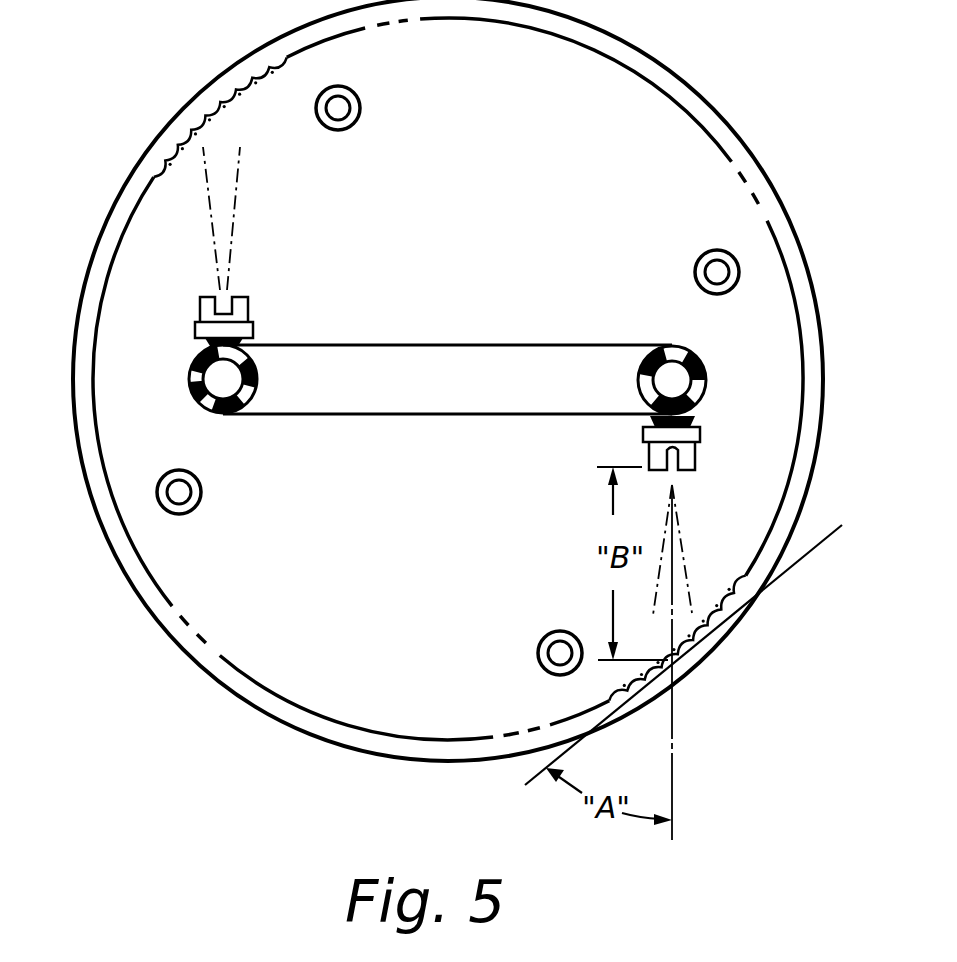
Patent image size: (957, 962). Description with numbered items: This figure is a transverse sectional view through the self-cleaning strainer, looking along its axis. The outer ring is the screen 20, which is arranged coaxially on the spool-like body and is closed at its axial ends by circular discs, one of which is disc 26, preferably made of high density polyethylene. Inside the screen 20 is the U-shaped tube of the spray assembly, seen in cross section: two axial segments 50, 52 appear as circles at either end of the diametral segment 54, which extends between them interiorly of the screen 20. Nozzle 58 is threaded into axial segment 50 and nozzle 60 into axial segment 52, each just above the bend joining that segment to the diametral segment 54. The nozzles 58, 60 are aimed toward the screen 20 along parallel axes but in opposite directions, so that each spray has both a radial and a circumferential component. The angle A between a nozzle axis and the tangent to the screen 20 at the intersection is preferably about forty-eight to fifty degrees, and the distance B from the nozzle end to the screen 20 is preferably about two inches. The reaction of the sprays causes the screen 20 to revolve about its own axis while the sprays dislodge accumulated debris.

The screen 20 is at (207, 110).
The circular disc 26 is at (745, 148).
The axial segment 50 is at (260, 383).
The axial segment 52 is at (644, 384).
The diametral segment 54 is at (470, 398).
The nozzle 58 is at (250, 300).
The nozzle 60 is at (697, 454).